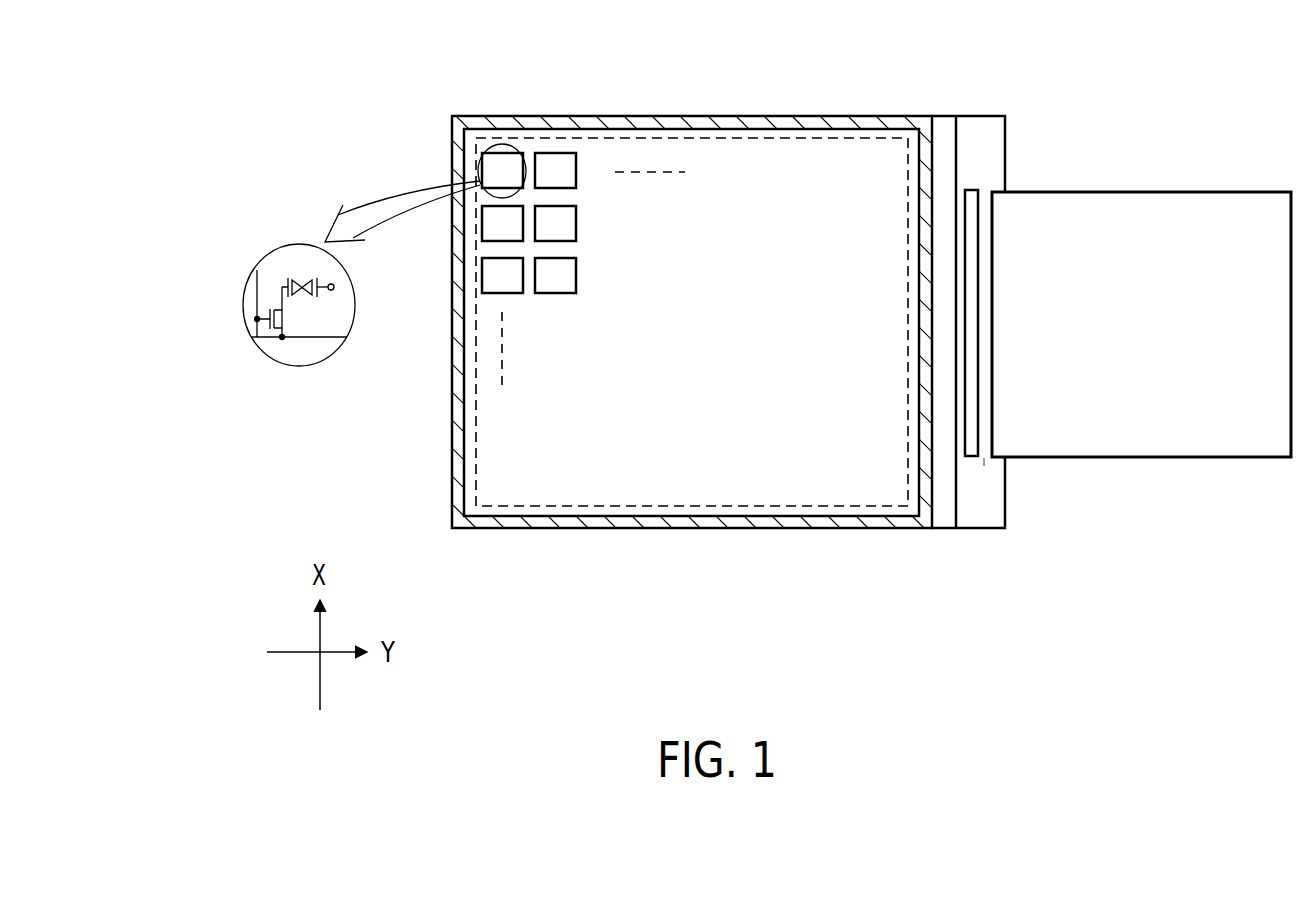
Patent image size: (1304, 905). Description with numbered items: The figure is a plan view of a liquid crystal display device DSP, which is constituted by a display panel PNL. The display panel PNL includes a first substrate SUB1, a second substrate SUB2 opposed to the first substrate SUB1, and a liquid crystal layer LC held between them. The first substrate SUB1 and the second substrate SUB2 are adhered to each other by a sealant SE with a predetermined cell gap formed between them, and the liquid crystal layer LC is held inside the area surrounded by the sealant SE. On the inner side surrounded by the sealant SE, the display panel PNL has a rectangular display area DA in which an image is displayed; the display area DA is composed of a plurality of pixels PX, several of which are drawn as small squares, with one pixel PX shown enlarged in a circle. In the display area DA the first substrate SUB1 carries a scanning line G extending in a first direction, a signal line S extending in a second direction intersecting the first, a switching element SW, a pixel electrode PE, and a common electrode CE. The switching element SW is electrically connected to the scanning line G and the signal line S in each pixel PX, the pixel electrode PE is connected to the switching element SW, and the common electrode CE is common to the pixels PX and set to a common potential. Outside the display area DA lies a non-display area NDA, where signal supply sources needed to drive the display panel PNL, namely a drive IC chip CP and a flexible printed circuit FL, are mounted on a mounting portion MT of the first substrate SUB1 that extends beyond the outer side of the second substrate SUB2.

The liquid crystal display device DSP is at (670, 344).
The display panel PNL is at (670, 332).
The display area DA is at (802, 516).
The non-display area NDA is at (670, 313).
The sealant SE is at (742, 117).
The first substrate SUB1 is at (1012, 325).
The second substrate SUB2 is at (942, 518).
The drive IC chip CP is at (972, 190).
The mounting portion MT is at (986, 464).
The flexible printed circuit FL is at (1157, 191).
The pixel PX is at (388, 240).
The pixel electrode PE is at (288, 278).
The liquid crystal layer LC is at (319, 246).
The common electrode CE is at (337, 291).
The switching element SW is at (298, 315).
The scanning line G is at (255, 288).
The signal line S is at (313, 339).